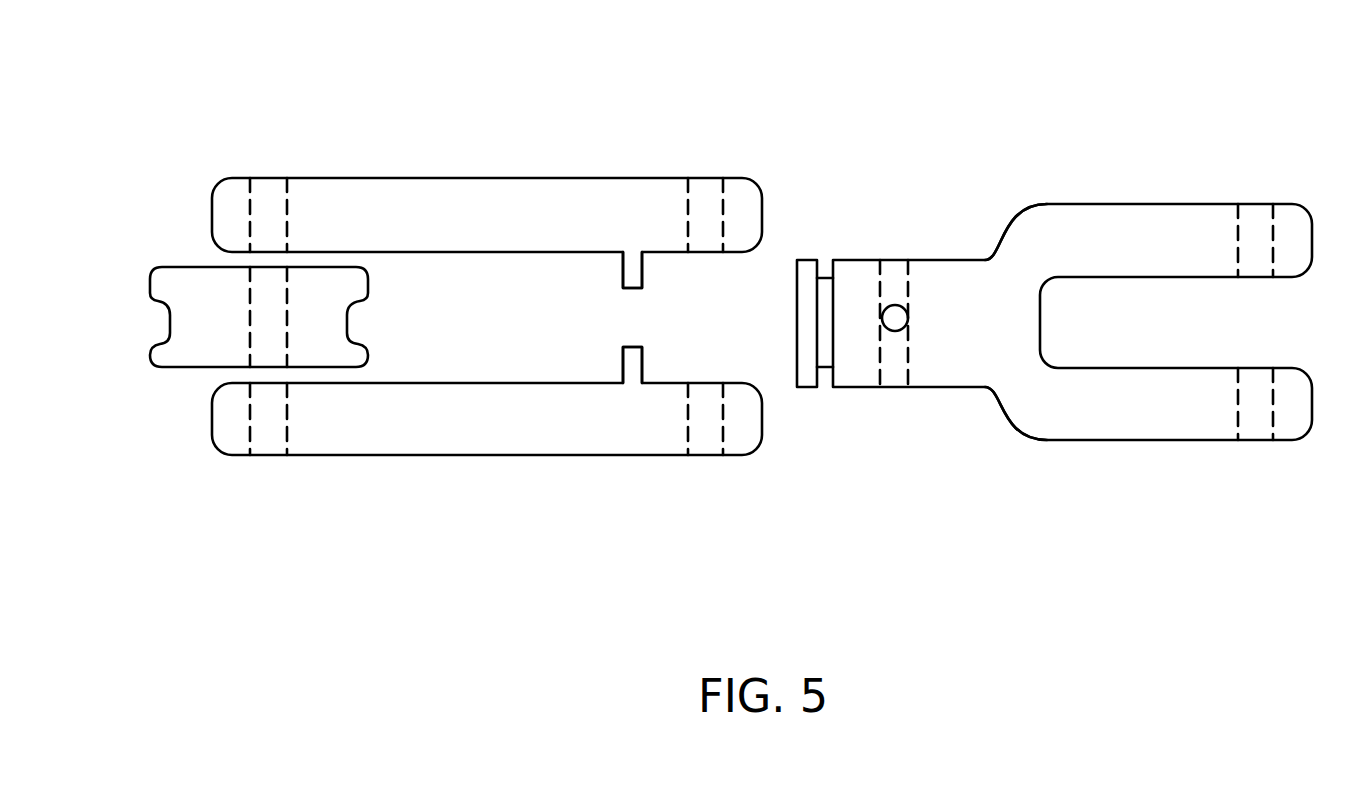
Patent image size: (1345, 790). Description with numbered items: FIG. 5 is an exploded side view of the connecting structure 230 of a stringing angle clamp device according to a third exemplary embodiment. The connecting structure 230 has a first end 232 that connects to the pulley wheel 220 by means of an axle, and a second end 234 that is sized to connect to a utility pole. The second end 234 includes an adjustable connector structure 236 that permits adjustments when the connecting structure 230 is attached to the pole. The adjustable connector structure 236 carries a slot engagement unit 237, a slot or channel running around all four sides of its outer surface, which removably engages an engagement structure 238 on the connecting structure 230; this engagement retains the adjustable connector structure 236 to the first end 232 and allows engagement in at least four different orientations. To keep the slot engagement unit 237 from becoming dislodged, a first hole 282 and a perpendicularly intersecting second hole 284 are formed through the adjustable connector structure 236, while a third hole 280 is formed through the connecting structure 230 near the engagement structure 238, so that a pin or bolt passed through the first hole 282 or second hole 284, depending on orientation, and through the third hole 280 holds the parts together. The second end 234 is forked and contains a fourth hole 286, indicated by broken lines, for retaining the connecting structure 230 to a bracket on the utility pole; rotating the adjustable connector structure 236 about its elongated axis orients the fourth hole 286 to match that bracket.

The connecting structure 230 is at (1021, 32).
The first end 232 is at (268, 148).
The second end 234 is at (1200, 173).
The pulley wheel 220 is at (178, 343).
The third hole 280 is at (707, 197).
The engagement structure 238 is at (632, 268).
The slot engagement unit 237 is at (827, 270).
The first hole 282 is at (895, 238).
The second hole 284 is at (897, 322).
The adjustable connector structure 236 is at (953, 358).
The fourth hole 286 is at (1260, 222).